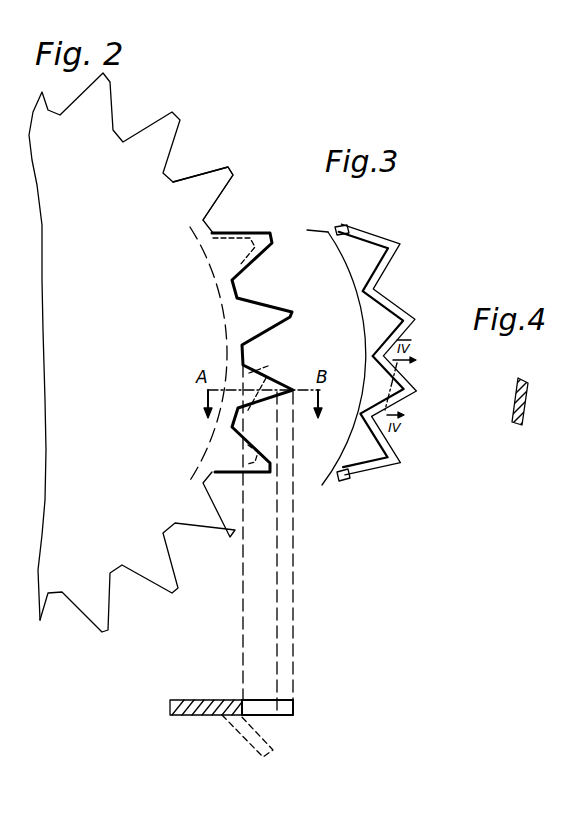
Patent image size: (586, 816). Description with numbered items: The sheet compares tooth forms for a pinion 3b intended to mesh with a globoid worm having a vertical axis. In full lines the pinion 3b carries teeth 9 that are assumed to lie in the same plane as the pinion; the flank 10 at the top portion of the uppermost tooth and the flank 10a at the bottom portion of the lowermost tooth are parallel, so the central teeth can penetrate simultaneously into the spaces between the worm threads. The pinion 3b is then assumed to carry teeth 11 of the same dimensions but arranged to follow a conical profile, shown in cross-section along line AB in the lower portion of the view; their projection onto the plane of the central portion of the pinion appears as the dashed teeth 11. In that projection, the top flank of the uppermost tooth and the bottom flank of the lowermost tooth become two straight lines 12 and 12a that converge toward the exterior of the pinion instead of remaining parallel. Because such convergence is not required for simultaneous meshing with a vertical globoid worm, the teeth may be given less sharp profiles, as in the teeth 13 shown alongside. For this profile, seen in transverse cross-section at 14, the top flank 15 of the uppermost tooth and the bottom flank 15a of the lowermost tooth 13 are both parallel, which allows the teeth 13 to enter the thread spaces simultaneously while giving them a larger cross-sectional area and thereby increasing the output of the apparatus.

In FIG. 2, the pinion 3b is at (143, 190).
In FIG. 2, the teeth 9 is at (262, 243).
In FIG. 2, the flank 10 is at (245, 233).
In FIG. 2, the teeth 11 is at (256, 235).
In FIG. 2, the straight line 12 is at (232, 232).
In FIG. 2, the flank 10a is at (255, 473).
In FIG. 2, the straight line 12a is at (238, 467).
In FIG. 3, the teeth 13 is at (370, 262).
In FIG. 3, the top flank 15 is at (368, 235).
In FIG. 3, the bottom flank 15a is at (373, 468).
In FIG. 4, the transverse cross-section 14 is at (518, 388).